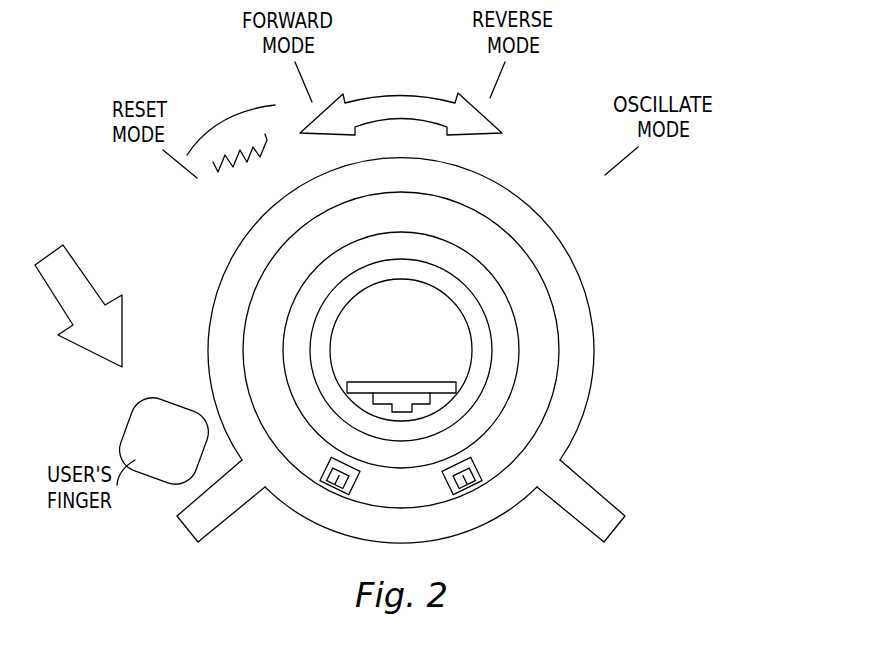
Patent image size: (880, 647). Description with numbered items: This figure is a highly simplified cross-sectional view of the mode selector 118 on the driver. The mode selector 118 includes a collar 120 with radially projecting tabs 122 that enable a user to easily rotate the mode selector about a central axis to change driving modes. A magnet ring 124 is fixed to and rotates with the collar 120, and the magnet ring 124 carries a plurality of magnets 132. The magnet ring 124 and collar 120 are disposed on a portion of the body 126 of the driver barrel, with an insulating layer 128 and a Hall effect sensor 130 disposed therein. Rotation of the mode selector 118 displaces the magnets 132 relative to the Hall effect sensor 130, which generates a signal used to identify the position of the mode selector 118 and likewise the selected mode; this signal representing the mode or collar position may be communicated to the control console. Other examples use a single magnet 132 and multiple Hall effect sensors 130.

The mode selector 118 is at (591, 59).
The collar 120 is at (565, 268).
The radially projecting tabs 122 is at (233, 512).
The magnet ring 124 is at (548, 330).
The body 126 is at (510, 363).
The insulating layer 128 is at (338, 305).
The Hall effect sensor 130 is at (400, 412).
The magnets 132 is at (335, 487).